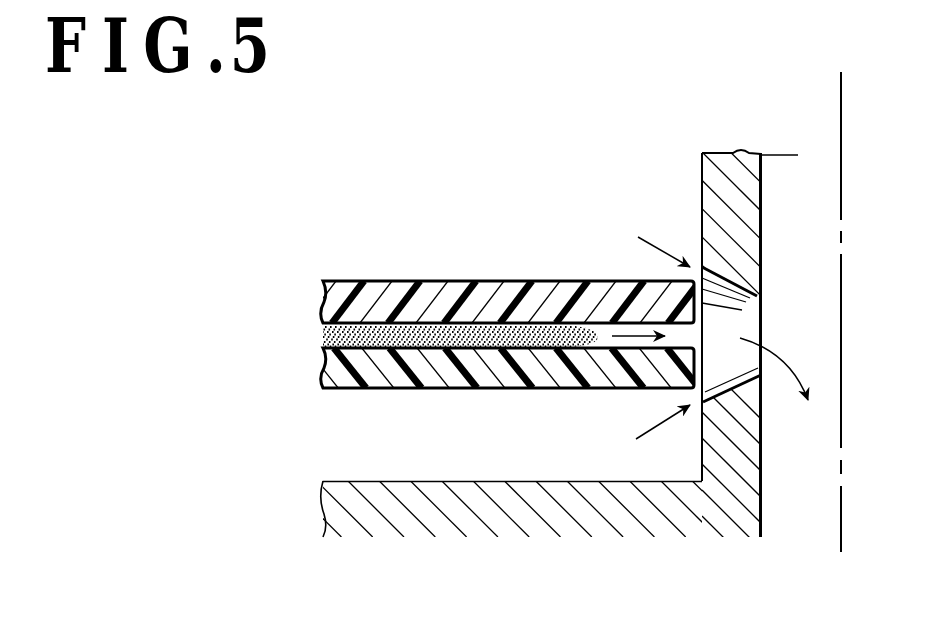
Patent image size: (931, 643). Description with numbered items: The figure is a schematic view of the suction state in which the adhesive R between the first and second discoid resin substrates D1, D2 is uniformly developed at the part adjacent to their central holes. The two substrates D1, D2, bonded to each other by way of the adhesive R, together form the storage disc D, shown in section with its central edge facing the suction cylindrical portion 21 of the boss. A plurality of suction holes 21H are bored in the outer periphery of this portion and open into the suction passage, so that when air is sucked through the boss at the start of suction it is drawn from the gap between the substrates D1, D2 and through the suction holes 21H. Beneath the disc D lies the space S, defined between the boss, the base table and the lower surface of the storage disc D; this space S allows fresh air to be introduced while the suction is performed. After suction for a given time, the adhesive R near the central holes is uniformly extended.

The suction cylindrical portion 21 is at (712, 172).
The suction holes 21H is at (749, 291).
The storage disc D is at (462, 334).
The first discoid resin substrate D1 is at (489, 367).
The second discoid resin substrate D2 is at (326, 305).
The adhesive R is at (451, 332).
The space S is at (489, 461).